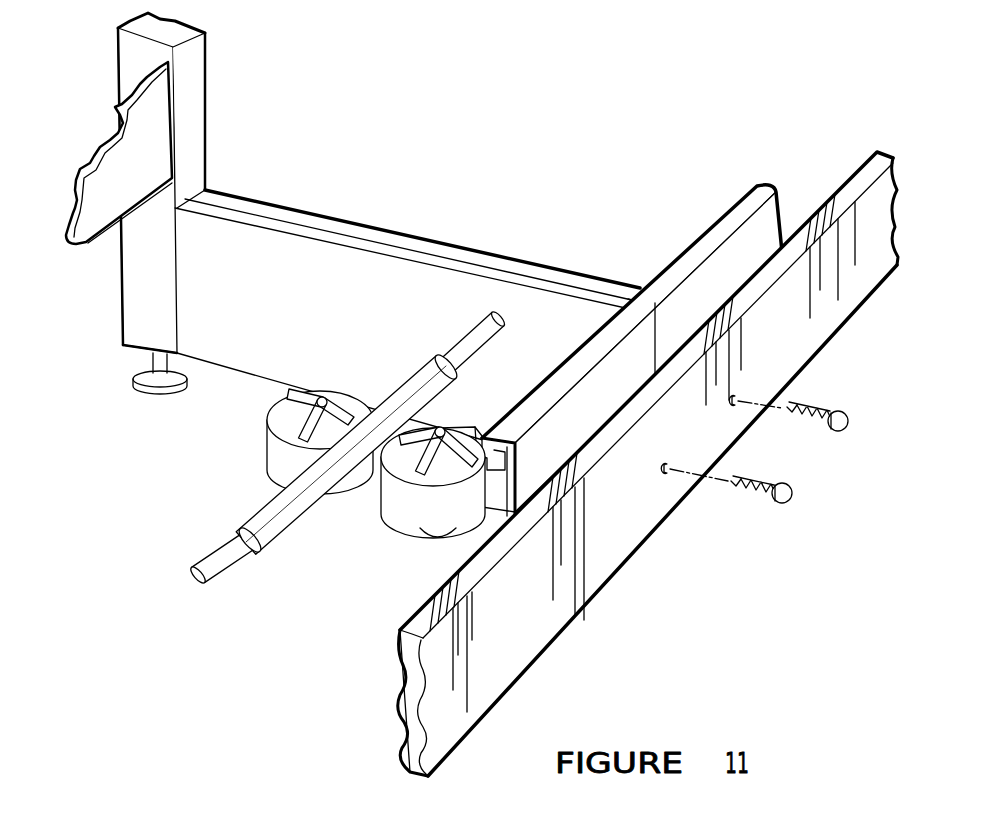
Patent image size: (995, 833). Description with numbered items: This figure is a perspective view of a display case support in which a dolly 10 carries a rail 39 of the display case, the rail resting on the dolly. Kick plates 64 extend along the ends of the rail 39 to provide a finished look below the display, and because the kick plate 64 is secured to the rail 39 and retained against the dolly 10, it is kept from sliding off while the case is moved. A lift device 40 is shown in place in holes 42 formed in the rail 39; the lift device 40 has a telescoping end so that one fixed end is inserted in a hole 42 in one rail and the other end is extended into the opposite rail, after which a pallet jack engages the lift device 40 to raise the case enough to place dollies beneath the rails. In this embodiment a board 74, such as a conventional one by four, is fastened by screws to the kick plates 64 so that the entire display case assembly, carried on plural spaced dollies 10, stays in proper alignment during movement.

The dolly 10 is at (248, 431).
The rail 39 is at (311, 218).
The lift device 40 is at (347, 462).
The hole 42 is at (492, 326).
The kick plate 64 is at (592, 347).
The board 74 is at (599, 568).